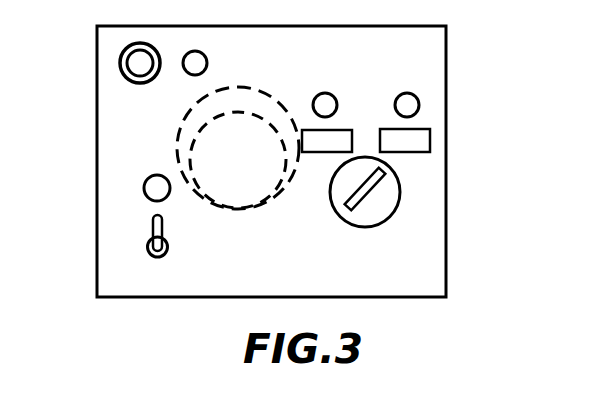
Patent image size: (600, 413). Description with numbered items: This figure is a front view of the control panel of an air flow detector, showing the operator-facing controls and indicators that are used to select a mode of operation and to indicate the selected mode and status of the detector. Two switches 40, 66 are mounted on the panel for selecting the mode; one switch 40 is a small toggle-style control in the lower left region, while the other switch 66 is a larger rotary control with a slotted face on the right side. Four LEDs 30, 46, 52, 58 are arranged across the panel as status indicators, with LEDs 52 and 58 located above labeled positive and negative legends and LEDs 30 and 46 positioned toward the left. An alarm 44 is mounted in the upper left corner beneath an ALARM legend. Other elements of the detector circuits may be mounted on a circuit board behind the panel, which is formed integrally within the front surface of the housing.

The alarm 44 is at (120, 62).
The LED 46 is at (207, 61).
The LED 58 is at (333, 93).
The LED 52 is at (400, 94).
The switch 66 is at (388, 218).
The LED 30 is at (144, 186).
The switch 40 is at (162, 230).